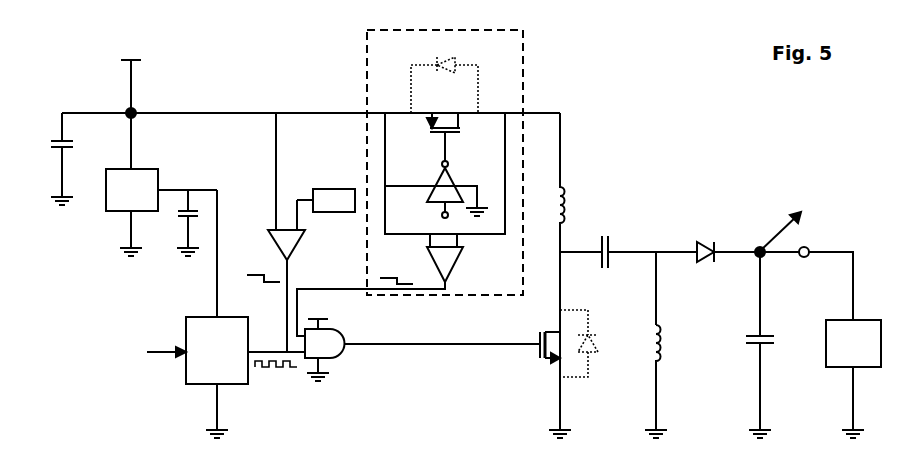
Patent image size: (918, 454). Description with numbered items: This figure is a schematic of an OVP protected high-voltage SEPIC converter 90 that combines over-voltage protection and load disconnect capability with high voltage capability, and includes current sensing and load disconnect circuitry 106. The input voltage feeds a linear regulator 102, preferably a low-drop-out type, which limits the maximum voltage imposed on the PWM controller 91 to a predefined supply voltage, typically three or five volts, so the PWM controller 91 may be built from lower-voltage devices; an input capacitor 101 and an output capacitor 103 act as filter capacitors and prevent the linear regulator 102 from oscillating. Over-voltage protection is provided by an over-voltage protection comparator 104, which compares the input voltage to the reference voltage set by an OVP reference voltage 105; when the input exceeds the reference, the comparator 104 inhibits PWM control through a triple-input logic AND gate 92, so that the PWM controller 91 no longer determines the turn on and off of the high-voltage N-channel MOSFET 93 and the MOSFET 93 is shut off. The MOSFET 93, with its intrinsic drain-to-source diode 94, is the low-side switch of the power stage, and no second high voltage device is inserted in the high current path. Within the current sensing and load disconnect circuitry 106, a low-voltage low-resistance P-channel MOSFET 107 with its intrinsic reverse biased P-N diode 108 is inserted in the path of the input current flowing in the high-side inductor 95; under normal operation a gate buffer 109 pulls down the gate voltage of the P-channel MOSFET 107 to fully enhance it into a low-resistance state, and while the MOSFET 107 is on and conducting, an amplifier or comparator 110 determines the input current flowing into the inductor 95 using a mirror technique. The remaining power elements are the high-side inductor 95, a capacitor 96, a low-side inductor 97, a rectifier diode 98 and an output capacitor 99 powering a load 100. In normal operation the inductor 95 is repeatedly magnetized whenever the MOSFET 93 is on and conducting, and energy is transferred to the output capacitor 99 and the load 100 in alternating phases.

The OVP protected high-voltage SEPIC converter 90 is at (114, 350).
The PWM controller 91 is at (247, 388).
The triple-input logic AND gate 92 is at (422, 341).
The high-voltage N-channel MOSFET 93 is at (538, 364).
The intrinsic drain-to-source diode 94 is at (598, 349).
The high-side inductor 95 is at (568, 202).
The capacitor 96 is at (611, 271).
The low-side inductor 97 is at (664, 330).
The rectifier diode 98 is at (723, 245).
The output capacitor 99 is at (746, 338).
The load 100 is at (824, 320).
The input capacitor 101 is at (70, 150).
The linear regulator 102 is at (106, 214).
The output capacitor 103 is at (182, 214).
The over-voltage protection comparator 104 is at (302, 246).
The OVP reference voltage 105 is at (338, 187).
The current sensing and load disconnect circuitry 106 is at (527, 50).
The low-voltage low-resistance P-channel MOSFET 107 is at (441, 108).
The intrinsic reverse biased P-N diode 108 is at (458, 60).
The gate buffer 109 is at (432, 180).
The amplifier or comparator 110 is at (463, 266).